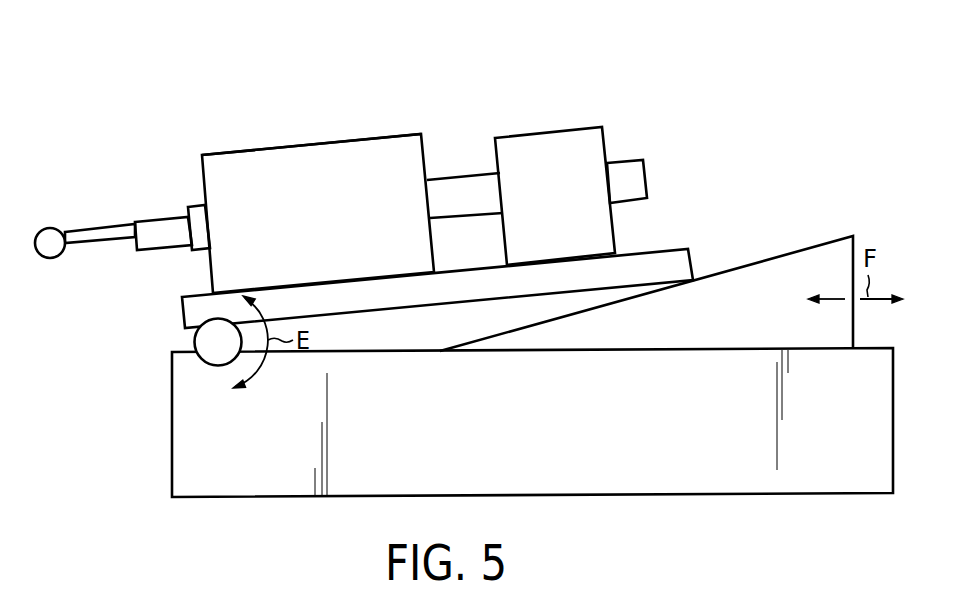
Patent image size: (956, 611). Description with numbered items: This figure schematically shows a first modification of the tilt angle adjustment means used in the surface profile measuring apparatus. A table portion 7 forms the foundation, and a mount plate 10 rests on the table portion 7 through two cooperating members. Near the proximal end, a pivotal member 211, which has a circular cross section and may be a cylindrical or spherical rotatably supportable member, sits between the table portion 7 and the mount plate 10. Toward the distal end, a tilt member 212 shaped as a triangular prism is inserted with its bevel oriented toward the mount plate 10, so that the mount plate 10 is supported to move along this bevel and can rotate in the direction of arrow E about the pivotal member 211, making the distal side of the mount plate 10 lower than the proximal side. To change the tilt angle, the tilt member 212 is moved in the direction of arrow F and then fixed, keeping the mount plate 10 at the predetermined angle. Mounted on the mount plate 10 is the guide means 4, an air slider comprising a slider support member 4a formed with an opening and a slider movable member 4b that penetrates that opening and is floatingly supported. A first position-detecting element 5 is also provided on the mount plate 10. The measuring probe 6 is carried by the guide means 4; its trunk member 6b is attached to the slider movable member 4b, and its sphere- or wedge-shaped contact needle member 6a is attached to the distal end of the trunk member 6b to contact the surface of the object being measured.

The guide means 4 is at (380, 122).
The slider support member 4a is at (265, 158).
The slider movable member 4b is at (192, 212).
The first position-detecting element 5 is at (558, 143).
The measuring probe 6 is at (113, 263).
The contact needle member 6a is at (50, 233).
The trunk member 6b is at (143, 232).
The table portion 7 is at (235, 490).
The mount plate 10 is at (665, 257).
The pivotal member 211 is at (195, 340).
The tilt member 212 is at (775, 270).